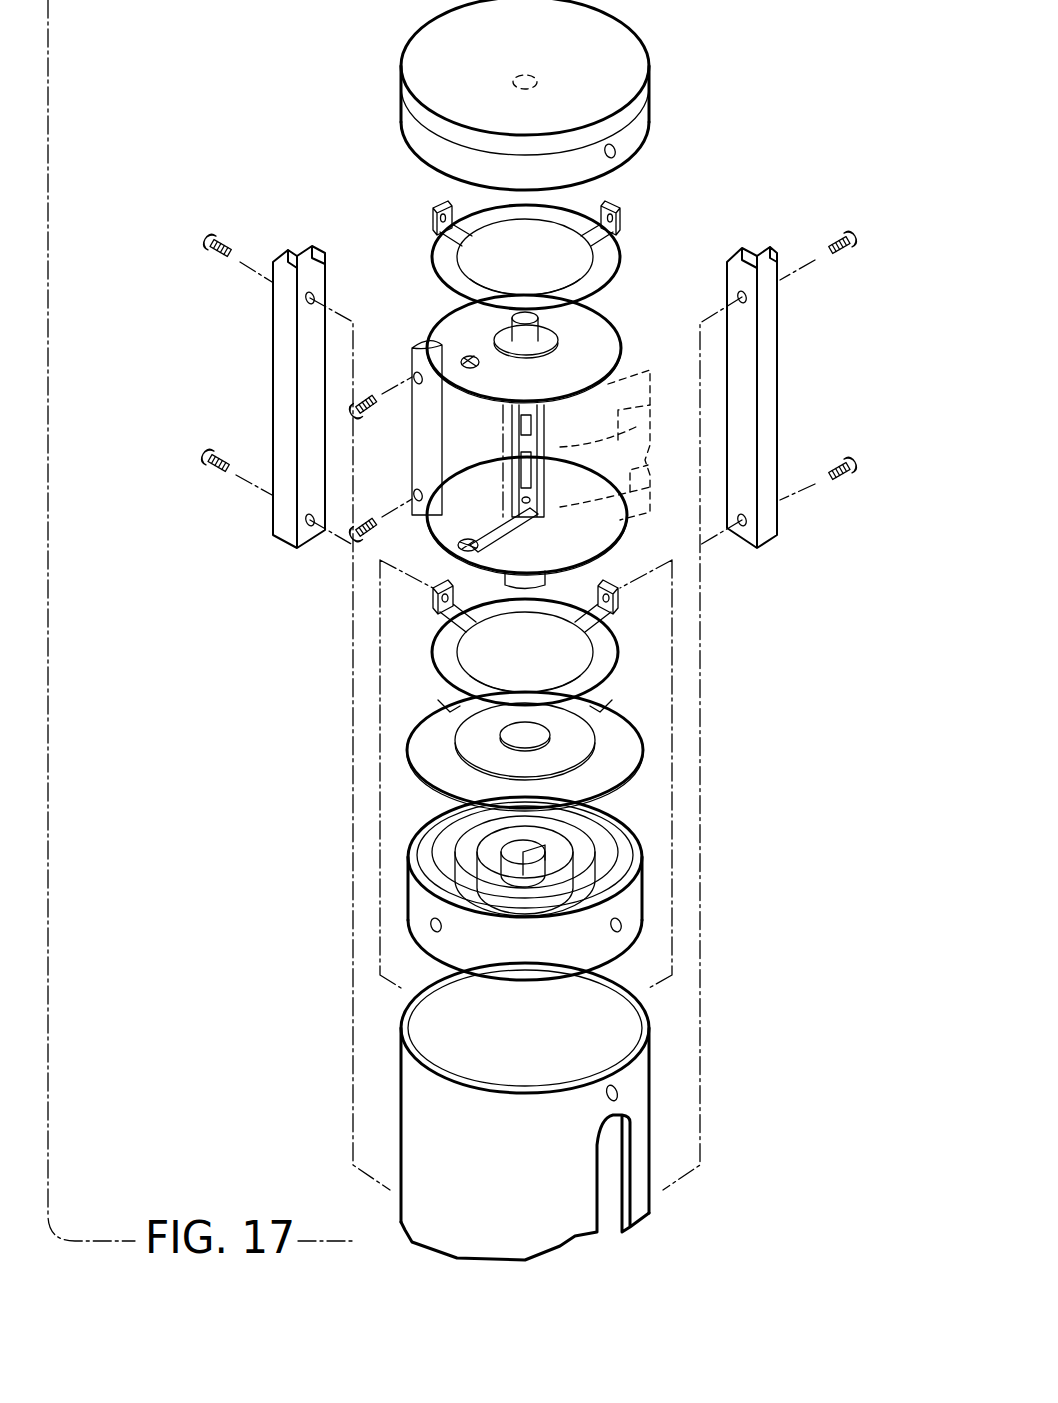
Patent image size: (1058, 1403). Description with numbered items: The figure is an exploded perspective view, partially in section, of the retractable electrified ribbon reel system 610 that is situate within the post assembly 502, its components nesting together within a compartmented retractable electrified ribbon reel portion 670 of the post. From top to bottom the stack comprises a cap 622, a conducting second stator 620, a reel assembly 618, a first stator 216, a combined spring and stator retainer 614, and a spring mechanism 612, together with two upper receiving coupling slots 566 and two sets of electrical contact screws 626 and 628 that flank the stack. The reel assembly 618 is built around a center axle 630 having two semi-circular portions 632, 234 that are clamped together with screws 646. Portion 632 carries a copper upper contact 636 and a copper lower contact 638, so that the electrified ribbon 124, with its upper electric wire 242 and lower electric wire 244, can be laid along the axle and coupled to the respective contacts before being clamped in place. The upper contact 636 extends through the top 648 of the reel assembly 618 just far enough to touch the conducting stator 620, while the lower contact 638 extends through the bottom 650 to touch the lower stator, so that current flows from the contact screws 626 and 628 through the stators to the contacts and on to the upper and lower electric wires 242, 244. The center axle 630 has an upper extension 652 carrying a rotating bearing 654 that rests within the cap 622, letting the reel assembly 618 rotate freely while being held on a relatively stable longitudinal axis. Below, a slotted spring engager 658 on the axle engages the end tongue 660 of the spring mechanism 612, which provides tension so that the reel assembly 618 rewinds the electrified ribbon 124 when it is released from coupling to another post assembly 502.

The cap 622 is at (668, 66).
The second stator 620 is at (635, 226).
The electrical contact screws 626 is at (213, 240).
The center axle 630 is at (466, 358).
The upper contact 636 is at (466, 360).
The upper extension 652 is at (539, 320).
The rotating bearing 654 is at (560, 335).
The electrified ribbon 124 is at (640, 368).
The upper electric wire 242 is at (645, 408).
The lower electric wire 244 is at (640, 470).
The top of the reel assembly 648 is at (580, 384).
The upper receiving coupling slot 566 is at (272, 345).
The screws 646 is at (352, 408).
The electrical contact screws 628 is at (204, 462).
The semi-circular portion 234 is at (410, 470).
The reel assembly 618 is at (460, 455).
The bottom of the reel assembly 650 is at (555, 555).
The slotted spring engager 658 is at (640, 575).
The lower contact 638 is at (460, 544).
The semi-circular portion 632 is at (495, 535).
The first stator 216 is at (632, 639).
The combined spring and stator retainer 614 is at (662, 766).
The end tongue 660 is at (560, 846).
The spring mechanism 612 is at (617, 885).
The post assembly 502 is at (558, 1111).
The retractable electrified ribbon reel system 610 is at (280, 1097).
The compartmented retractable electrified ribbon reel portion 670 is at (402, 1212).